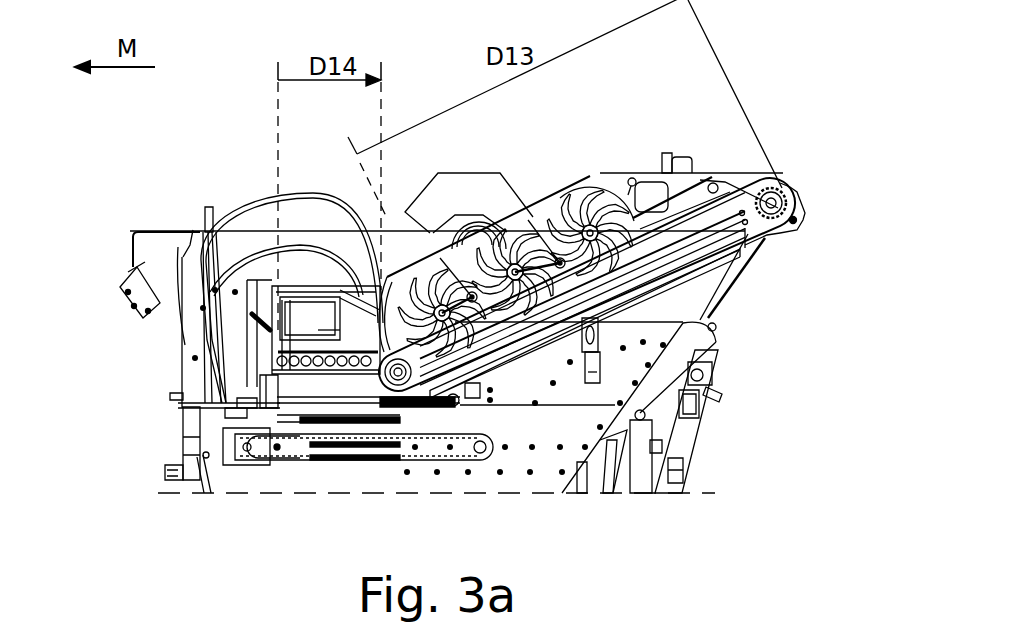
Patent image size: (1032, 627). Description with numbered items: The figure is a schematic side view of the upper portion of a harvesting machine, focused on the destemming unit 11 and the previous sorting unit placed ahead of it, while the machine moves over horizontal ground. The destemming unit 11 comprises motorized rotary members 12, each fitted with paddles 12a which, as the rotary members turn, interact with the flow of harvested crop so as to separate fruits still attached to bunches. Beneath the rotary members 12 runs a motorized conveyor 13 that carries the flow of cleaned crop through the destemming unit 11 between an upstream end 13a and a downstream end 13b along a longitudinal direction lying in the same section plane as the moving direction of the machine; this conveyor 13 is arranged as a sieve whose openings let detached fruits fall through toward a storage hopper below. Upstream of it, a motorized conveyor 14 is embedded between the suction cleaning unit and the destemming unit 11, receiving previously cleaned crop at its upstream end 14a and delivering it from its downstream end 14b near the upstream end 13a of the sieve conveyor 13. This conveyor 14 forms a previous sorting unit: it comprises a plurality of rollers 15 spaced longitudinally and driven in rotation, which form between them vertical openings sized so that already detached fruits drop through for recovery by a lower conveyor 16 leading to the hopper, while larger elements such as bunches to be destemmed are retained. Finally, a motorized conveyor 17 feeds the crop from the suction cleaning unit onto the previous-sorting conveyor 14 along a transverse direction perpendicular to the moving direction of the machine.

The destemming unit 11 is at (672, 175).
The rotary members 12 is at (516, 225).
The paddles 12a is at (505, 228).
The motorized conveyor 13 is at (626, 330).
The upstream end 13a is at (420, 415).
The downstream end 13b is at (780, 186).
The motorized conveyor 14 is at (217, 418).
The upstream end 14a is at (300, 375).
The downstream end 14b is at (355, 380).
The rollers 15 is at (300, 360).
The lower conveyor 16 is at (490, 453).
The motorized conveyor 17 is at (300, 335).